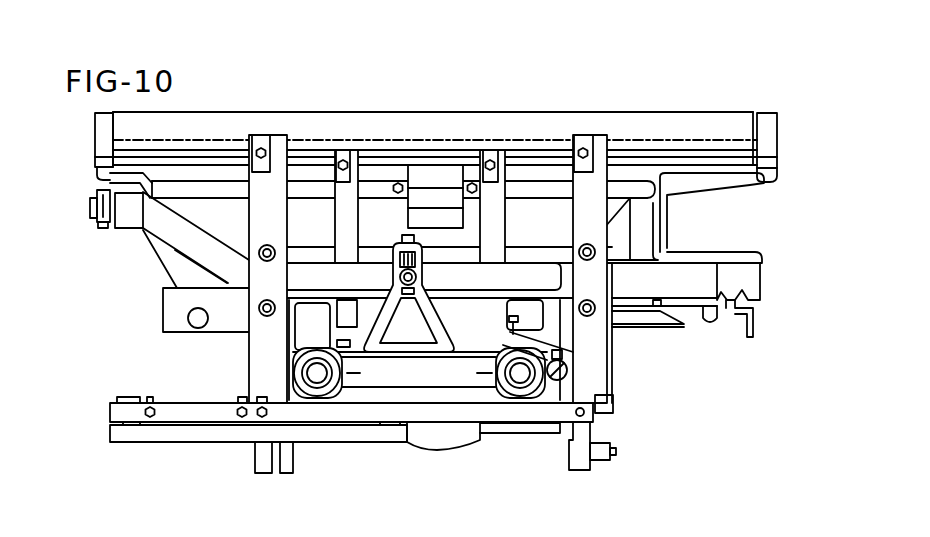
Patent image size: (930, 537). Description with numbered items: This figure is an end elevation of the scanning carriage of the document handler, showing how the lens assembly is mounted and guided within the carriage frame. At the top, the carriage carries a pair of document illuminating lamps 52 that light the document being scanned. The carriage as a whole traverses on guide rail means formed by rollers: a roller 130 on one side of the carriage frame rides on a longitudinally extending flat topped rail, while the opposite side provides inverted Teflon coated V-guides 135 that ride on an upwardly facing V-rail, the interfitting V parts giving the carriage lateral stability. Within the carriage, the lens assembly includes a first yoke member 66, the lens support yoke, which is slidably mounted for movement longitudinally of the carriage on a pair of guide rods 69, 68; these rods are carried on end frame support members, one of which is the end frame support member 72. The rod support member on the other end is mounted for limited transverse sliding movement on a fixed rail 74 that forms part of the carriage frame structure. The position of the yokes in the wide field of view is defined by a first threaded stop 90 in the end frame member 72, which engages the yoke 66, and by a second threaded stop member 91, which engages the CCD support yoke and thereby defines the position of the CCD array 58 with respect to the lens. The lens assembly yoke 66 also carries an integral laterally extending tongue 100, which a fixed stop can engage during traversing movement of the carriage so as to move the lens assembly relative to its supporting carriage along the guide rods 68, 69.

The document illuminating lamps 52 is at (400, 118).
The roller 130 is at (106, 230).
The inverted Teflon coated V-guides 135 is at (752, 274).
The tongue 100 is at (661, 321).
The second threaded stop member 91 is at (511, 333).
The first threaded stop 90 is at (564, 368).
The first yoke member 66 is at (300, 336).
The guide rod 69 is at (319, 376).
The fixed rail 74 is at (403, 332).
The end frame support member 72 is at (445, 387).
The CCD array 58 is at (430, 443).
The guide rod 68 is at (520, 374).